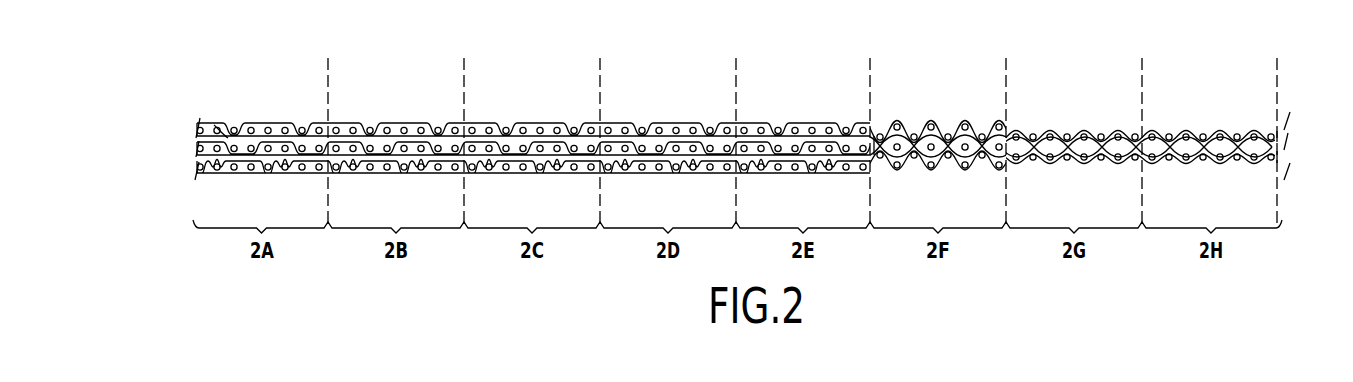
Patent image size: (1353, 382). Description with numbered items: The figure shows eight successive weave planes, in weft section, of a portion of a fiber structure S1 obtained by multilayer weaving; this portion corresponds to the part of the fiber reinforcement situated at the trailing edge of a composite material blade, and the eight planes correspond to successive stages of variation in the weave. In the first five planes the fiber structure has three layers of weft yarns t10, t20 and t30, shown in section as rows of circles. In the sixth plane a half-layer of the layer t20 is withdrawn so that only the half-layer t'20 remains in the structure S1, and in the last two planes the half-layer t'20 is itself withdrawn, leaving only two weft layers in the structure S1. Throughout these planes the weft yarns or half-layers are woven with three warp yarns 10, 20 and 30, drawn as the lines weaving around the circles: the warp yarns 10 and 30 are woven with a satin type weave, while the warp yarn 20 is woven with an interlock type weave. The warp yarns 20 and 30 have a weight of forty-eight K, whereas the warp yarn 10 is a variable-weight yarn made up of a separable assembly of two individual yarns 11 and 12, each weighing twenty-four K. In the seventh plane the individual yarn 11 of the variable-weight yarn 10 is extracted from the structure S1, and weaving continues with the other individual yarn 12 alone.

The warp yarn 10 is at (213, 126).
The individual yarn 11 is at (1140, 150).
The individual yarn 12 is at (1160, 128).
The warp yarn 20 is at (228, 138).
The warp yarn 30 is at (242, 172).
The fiber structure S1 is at (792, 60).
The layer of weft yarns t10 is at (184, 130).
The layer of weft yarns t20 is at (184, 148).
The layer of weft yarns t30 is at (184, 167).
The half-layer of weft yarns t'20 is at (898, 120).